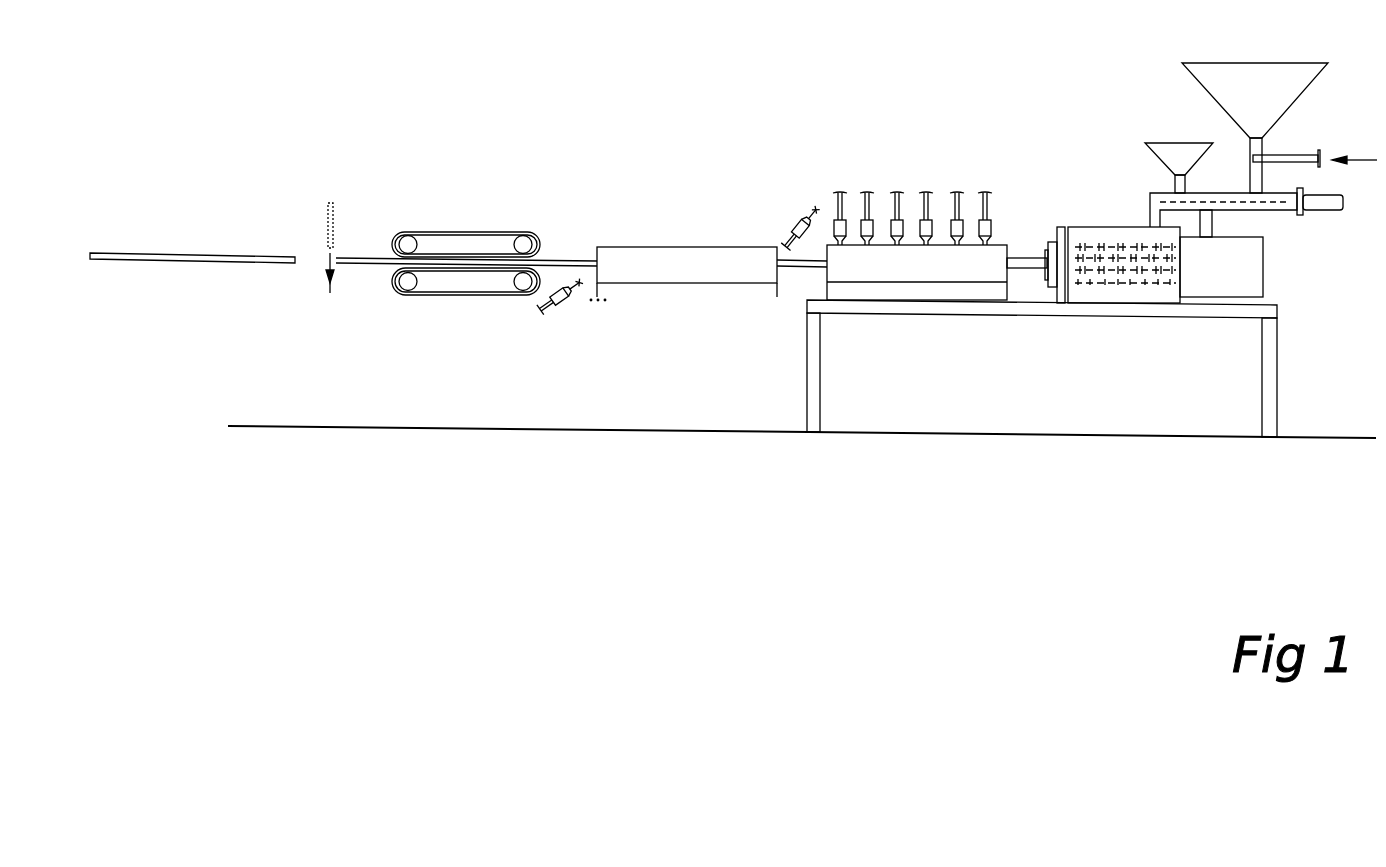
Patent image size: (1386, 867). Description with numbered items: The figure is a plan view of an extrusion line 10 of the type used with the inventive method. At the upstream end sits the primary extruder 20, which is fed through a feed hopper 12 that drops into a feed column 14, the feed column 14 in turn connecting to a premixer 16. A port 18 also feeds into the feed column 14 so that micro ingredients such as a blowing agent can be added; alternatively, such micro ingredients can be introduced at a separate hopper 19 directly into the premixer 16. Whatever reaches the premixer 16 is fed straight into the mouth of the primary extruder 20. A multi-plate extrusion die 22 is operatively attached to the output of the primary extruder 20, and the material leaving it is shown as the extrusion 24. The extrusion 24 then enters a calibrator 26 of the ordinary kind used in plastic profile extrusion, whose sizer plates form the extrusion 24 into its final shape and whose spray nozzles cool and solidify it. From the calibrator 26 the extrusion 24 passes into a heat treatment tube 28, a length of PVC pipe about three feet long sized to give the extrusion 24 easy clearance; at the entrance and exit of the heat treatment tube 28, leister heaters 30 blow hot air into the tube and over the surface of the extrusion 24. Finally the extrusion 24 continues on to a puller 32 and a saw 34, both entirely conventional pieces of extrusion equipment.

The extrusion line 10 is at (745, 364).
The feed hopper 12 is at (1200, 92).
The feed column 14 is at (1262, 143).
The premixer 16 is at (1267, 210).
The port 18 is at (1302, 155).
The hopper 19 is at (1153, 140).
The primary extruder 20 is at (1112, 226).
The multi-plate extrusion die 22 is at (1048, 242).
The extrusion 24 is at (160, 253).
The calibrator 26 is at (820, 275).
The heat treatment tube 28 is at (632, 247).
The leister heaters 30 is at (552, 306).
The puller 32 is at (432, 232).
The saw 34 is at (330, 200).